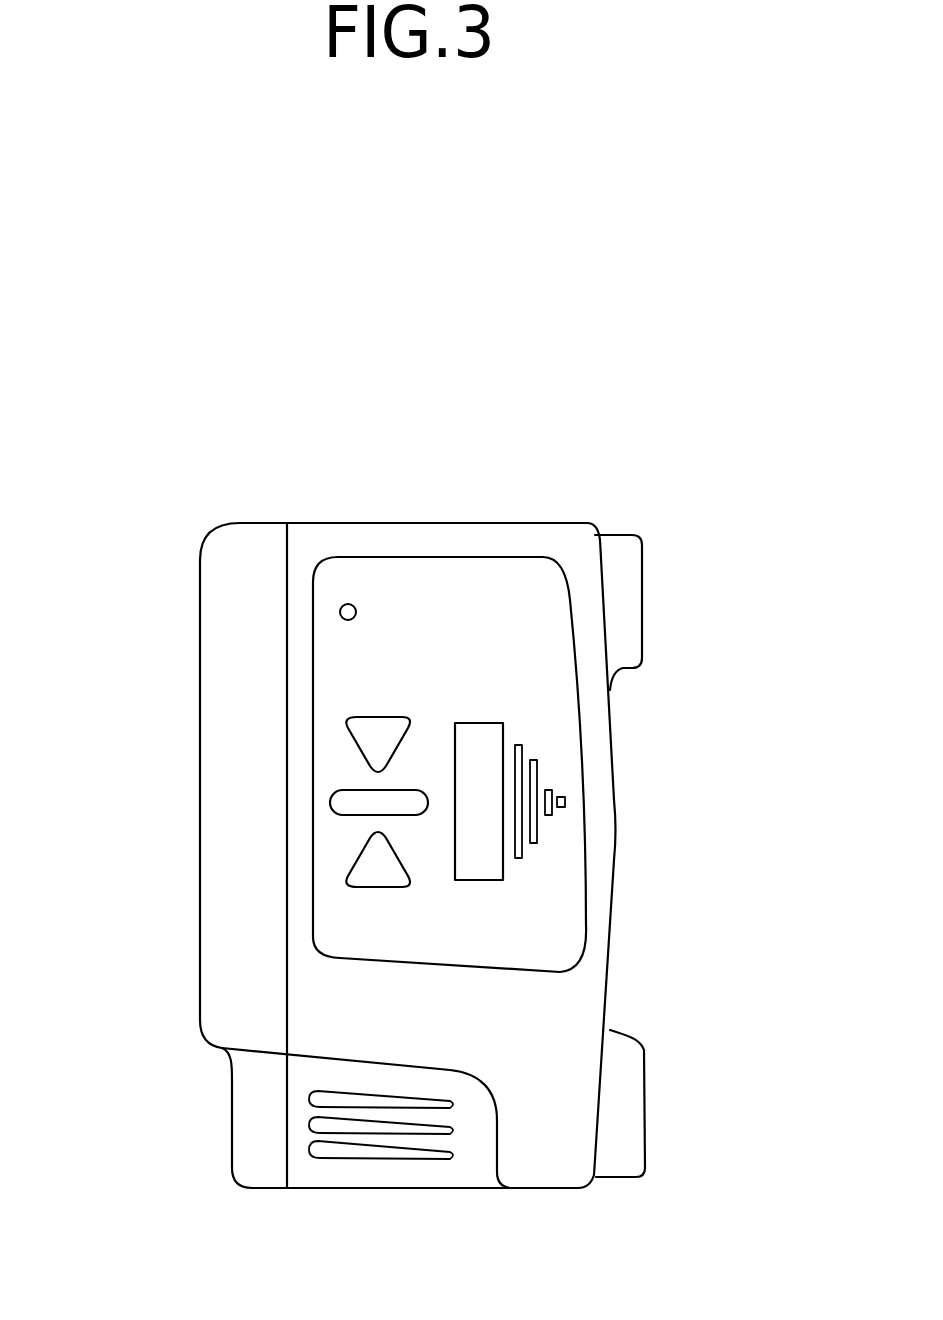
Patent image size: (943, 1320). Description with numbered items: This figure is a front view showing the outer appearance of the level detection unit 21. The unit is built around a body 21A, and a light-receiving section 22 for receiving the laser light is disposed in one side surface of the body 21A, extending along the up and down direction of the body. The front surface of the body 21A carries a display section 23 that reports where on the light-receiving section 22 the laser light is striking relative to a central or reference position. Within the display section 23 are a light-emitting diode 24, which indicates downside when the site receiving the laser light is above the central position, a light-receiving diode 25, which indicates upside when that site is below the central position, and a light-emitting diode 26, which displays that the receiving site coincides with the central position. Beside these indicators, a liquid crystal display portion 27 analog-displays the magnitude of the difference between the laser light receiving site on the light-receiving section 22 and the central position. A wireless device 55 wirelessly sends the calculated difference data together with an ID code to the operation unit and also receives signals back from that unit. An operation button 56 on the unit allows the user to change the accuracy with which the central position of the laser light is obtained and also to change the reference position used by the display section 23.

The level detection unit 21 is at (534, 482).
The body 21A is at (425, 523).
The light-receiving section 22 is at (198, 773).
The display section 23 is at (555, 712).
The light-emitting diode 24 is at (383, 725).
The light-receiving diode 25 is at (390, 879).
The light-emitting diode 26 is at (347, 803).
The liquid crystal display portion 27 is at (482, 867).
The wireless device 55 is at (417, 1172).
The operation button 56 is at (348, 603).